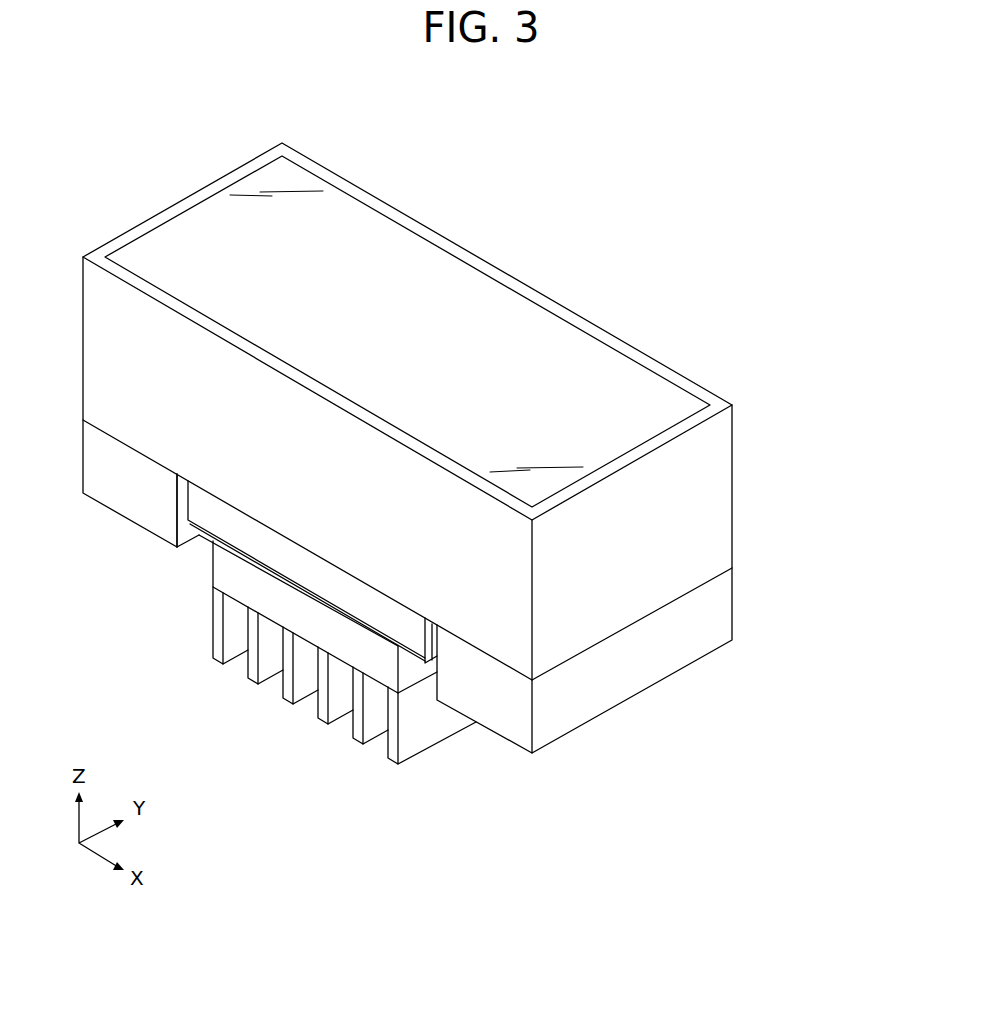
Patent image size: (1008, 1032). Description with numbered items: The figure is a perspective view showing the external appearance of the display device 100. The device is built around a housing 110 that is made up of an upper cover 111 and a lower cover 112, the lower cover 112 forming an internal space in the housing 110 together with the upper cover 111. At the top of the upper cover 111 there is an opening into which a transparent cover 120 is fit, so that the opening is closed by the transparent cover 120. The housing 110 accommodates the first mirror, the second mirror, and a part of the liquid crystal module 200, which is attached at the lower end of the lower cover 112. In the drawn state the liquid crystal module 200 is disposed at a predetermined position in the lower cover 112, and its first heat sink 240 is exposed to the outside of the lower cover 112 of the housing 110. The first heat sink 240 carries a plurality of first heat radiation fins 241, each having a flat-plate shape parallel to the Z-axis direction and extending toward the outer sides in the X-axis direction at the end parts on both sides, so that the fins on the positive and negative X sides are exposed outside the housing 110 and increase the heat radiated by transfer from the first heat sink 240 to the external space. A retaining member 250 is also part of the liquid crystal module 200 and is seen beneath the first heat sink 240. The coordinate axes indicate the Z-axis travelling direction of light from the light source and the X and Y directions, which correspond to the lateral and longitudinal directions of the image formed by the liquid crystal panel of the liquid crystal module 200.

The display device 100 is at (669, 197).
The housing 110 is at (800, 489).
The upper cover 111 is at (716, 533).
The lower cover 112 is at (691, 606).
The transparent cover 120 is at (423, 250).
The liquid crystal module 200 is at (189, 634).
The first heat sink 240 is at (317, 561).
The first heat radiation fins 241 is at (197, 503).
The retaining member 250 is at (218, 563).